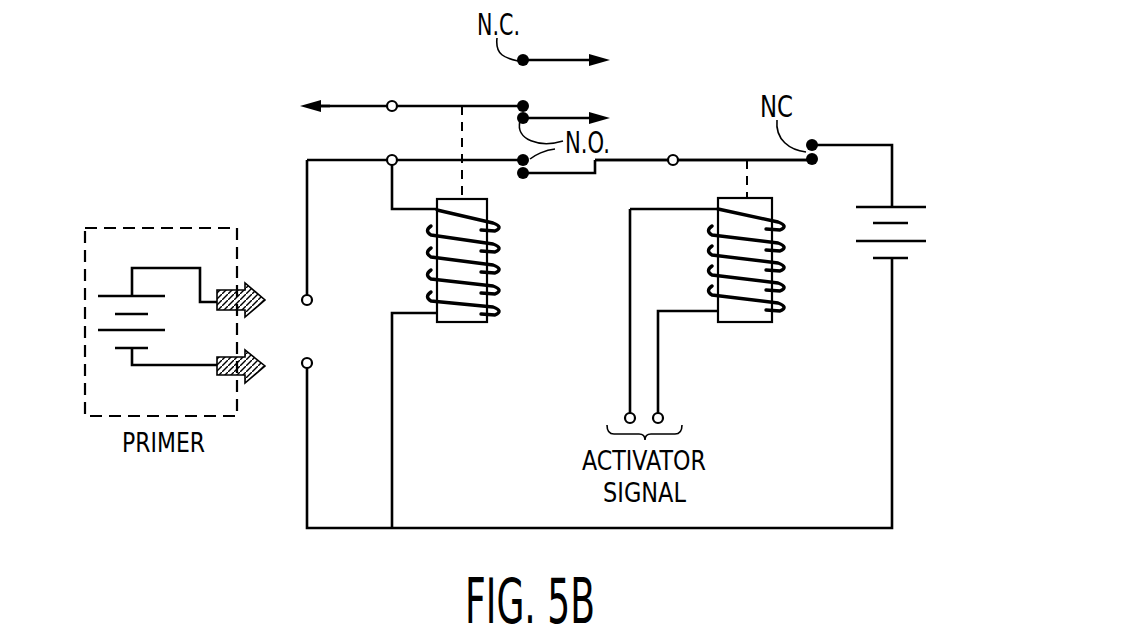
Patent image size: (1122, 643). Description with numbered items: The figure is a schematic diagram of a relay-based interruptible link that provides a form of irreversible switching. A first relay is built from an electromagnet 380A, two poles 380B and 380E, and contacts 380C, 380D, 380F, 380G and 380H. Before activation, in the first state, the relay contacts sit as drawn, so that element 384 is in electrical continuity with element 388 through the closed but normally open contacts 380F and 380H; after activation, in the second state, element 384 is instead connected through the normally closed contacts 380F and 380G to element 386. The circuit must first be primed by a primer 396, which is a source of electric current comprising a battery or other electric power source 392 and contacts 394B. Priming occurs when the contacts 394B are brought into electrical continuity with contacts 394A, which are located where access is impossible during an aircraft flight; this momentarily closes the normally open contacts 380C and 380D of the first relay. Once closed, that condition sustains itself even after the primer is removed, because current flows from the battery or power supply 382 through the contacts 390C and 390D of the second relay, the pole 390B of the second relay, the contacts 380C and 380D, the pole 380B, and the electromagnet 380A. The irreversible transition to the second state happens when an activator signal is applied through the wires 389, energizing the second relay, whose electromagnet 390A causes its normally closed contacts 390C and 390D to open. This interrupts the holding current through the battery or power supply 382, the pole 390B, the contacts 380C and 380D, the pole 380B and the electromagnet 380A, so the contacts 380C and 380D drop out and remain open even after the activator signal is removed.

The electromagnet 380A is at (450, 323).
The pole 380B is at (433, 158).
The contact 380C is at (518, 166).
The contact 380D is at (528, 177).
The pole 380E is at (420, 104).
The contact 380F is at (520, 102).
The contact 380G is at (528, 57).
The contact 380H is at (554, 92).
The battery or power supply 382 is at (915, 241).
The element 384 is at (340, 109).
The element 386 is at (599, 54).
The element 388 is at (598, 111).
The wires 389 is at (630, 340).
The electromagnet 390A is at (753, 322).
The pole 390B is at (765, 158).
The contact 390C is at (812, 166).
The contact 390D is at (813, 140).
The battery or other electric power source 392 is at (103, 334).
The contacts 394A is at (313, 301).
The contacts 394B is at (252, 286).
The primer 396 is at (191, 318).